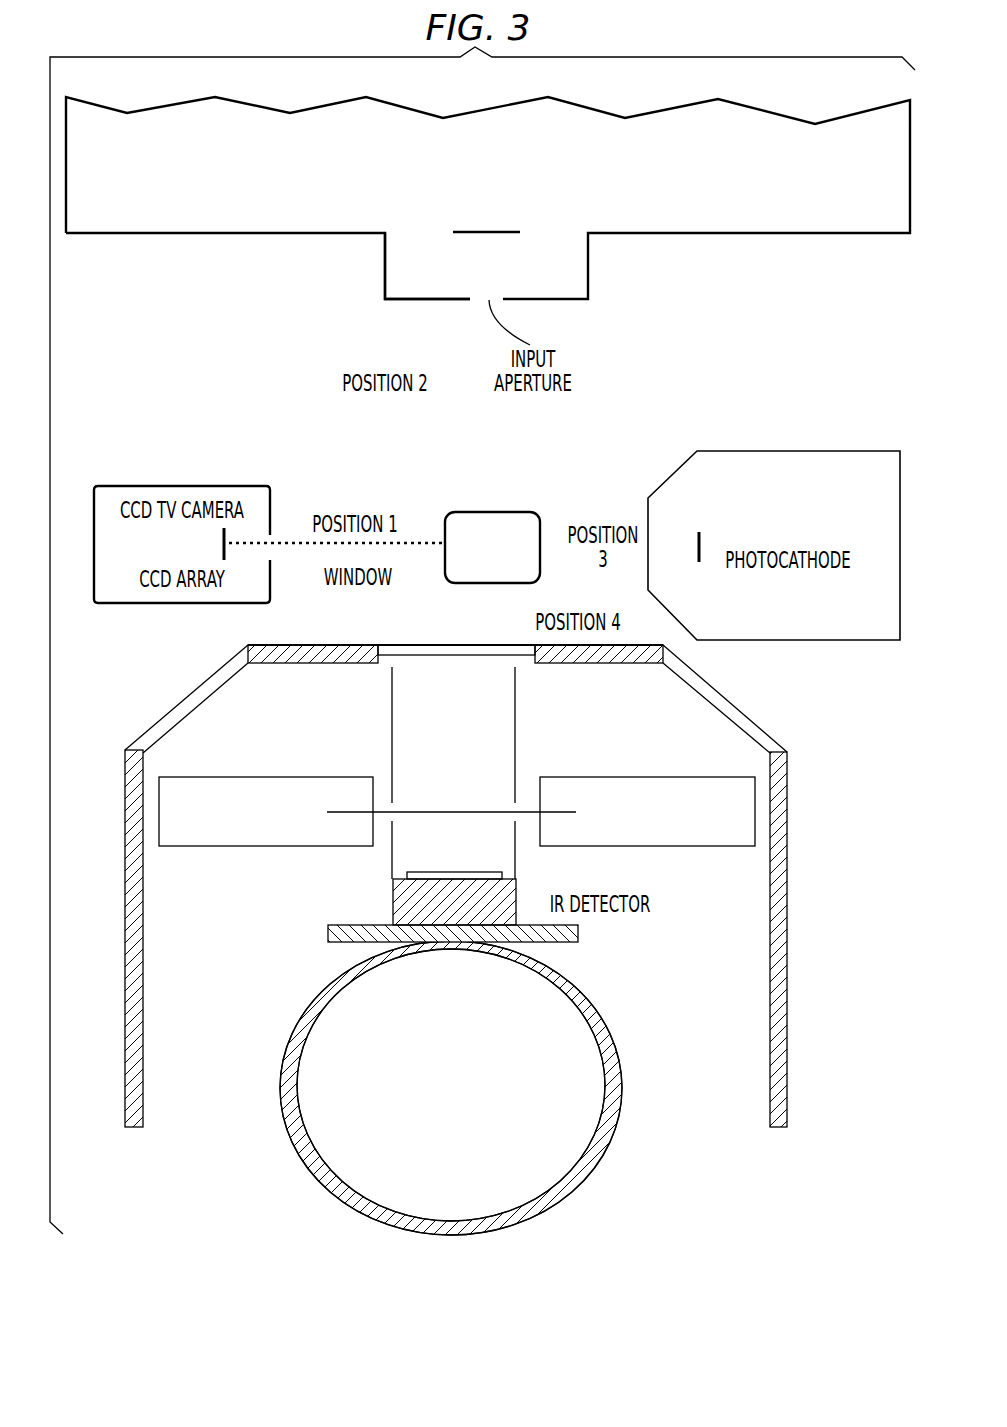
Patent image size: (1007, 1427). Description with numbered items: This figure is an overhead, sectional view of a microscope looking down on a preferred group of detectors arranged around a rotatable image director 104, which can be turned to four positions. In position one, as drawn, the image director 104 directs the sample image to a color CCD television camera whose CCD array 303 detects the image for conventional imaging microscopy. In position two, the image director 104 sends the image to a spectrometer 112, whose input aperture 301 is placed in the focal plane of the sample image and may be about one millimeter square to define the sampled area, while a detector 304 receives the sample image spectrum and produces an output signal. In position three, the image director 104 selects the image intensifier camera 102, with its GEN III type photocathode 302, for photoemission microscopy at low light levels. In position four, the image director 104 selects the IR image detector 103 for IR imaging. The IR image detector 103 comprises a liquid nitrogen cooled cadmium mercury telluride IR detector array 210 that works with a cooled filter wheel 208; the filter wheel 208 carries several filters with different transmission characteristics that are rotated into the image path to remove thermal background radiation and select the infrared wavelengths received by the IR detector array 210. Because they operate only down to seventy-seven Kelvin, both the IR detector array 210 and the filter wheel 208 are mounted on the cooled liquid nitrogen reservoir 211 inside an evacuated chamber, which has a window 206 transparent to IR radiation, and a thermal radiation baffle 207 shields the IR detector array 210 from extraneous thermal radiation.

The image intensifier camera 102 is at (819, 450).
The IR image detector 103 is at (790, 812).
The image director 104 is at (488, 511).
The spectrometer 112 is at (797, 234).
The window 206 is at (425, 645).
The thermal radiation baffle 207 is at (518, 718).
The filter wheel 208 is at (329, 776).
The IR detector array 210 is at (518, 893).
The liquid nitrogen reservoir 211 is at (617, 1124).
The input aperture 301 is at (397, 300).
The photocathode 302 is at (705, 548).
The CCD array 303 is at (223, 549).
The detector 304 is at (500, 233).